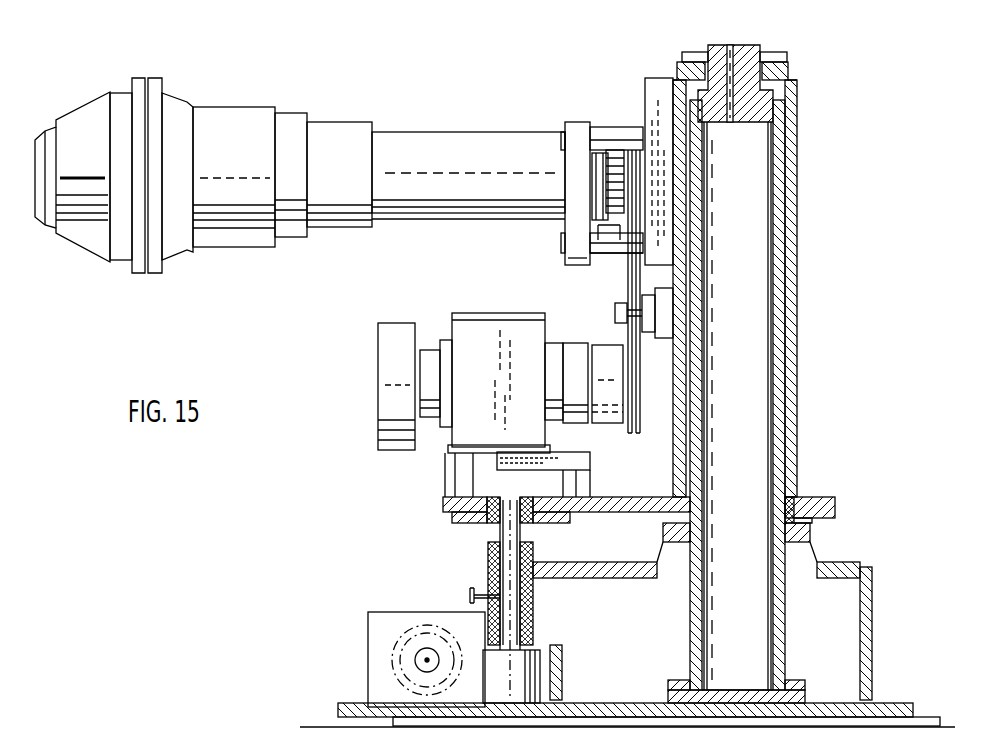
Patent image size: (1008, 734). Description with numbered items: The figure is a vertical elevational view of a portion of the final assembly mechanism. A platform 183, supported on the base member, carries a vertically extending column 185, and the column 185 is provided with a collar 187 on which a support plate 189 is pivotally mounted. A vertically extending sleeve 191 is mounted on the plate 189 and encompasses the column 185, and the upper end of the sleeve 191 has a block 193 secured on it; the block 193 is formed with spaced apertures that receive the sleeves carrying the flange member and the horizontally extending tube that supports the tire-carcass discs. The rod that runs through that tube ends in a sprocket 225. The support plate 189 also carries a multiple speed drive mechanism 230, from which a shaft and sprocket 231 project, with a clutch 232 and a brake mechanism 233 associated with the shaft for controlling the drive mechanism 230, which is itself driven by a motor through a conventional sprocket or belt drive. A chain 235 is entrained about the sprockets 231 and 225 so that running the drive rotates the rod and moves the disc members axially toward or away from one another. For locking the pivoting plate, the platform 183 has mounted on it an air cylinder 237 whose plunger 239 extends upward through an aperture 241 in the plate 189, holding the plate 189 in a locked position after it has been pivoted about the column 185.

The platform 183 is at (615, 703).
The column 185 is at (790, 610).
The collar 187 is at (812, 535).
The support plate 189 is at (810, 497).
The sleeve 191 is at (797, 248).
The block 193 is at (655, 95).
The sprocket 225 is at (627, 130).
The multiple speed drive mechanism 230 is at (497, 337).
The shaft and sprocket 231 is at (643, 413).
The clutch 232 is at (578, 352).
The brake mechanism 233 is at (610, 413).
The chain 235 is at (623, 283).
The air cylinder 237 is at (517, 673).
The plunger 239 is at (505, 565).
The aperture 241 is at (507, 512).